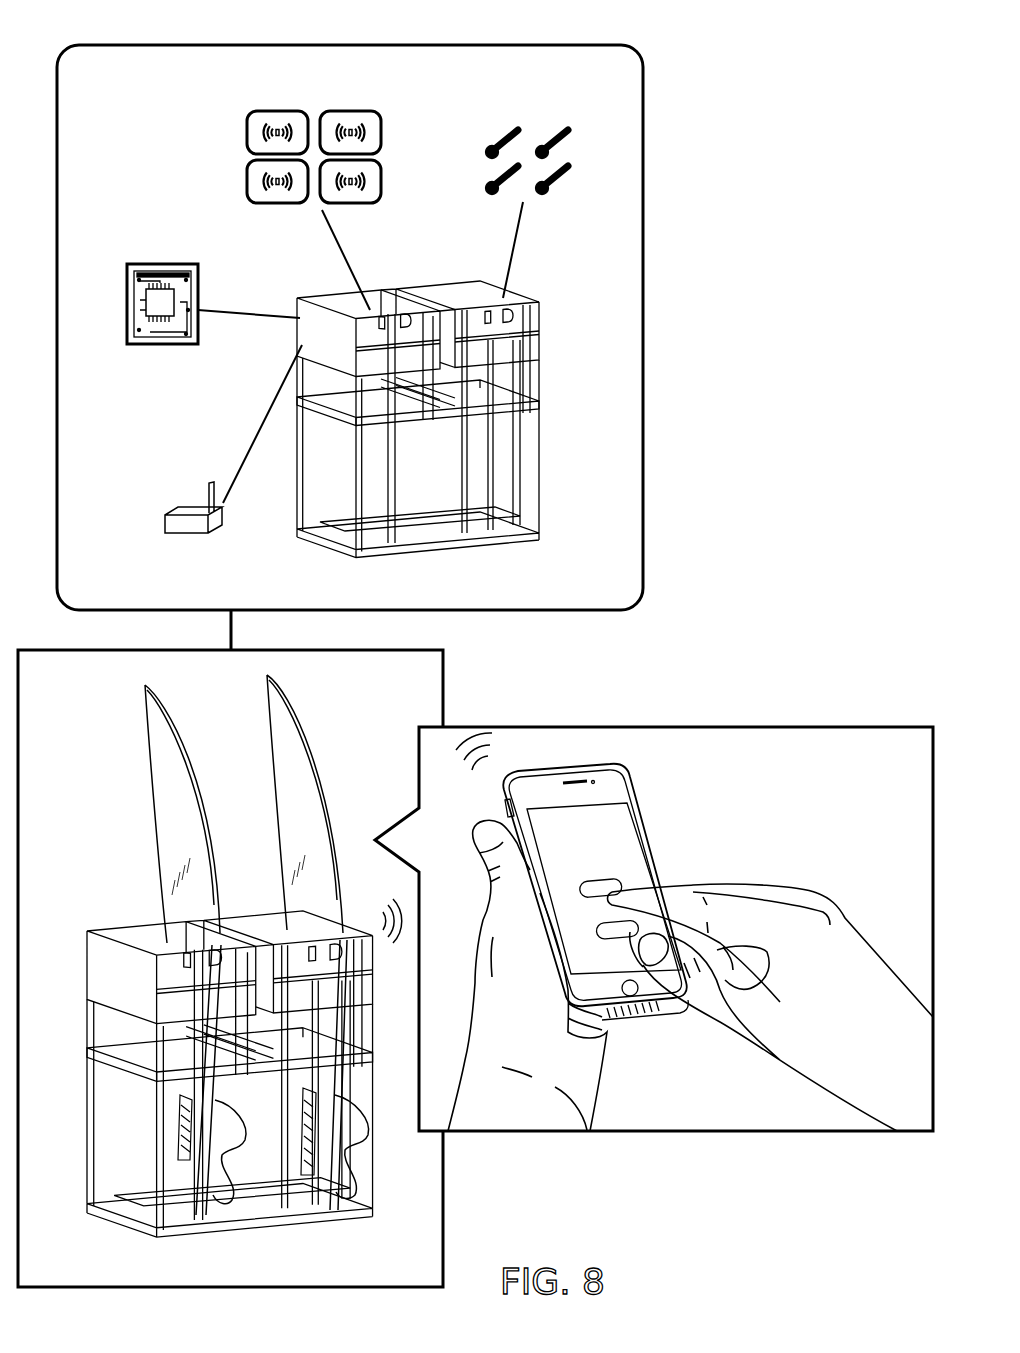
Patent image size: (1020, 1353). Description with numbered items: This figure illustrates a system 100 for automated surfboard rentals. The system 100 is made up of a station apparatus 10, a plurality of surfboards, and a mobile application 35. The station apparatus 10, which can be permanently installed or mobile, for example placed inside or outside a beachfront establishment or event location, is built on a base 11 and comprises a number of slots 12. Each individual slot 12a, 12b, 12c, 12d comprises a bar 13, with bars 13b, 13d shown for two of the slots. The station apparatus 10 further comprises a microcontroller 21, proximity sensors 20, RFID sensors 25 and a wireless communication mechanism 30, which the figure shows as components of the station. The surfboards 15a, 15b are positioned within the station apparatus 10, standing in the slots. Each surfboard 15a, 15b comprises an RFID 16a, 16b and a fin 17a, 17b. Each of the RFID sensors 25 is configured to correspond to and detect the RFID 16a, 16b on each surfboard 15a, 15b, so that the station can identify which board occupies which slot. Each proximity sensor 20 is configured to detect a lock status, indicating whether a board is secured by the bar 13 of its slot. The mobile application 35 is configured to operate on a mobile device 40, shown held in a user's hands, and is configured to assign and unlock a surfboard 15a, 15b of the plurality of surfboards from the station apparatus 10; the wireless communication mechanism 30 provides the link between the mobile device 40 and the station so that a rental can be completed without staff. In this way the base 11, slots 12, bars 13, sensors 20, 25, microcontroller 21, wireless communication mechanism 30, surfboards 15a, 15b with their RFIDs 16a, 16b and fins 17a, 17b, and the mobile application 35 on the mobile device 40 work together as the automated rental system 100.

The station apparatus 10 is at (613, 43).
The system 100 is at (838, 106).
The base 11 is at (323, 545).
The slots 12 is at (518, 387).
The slot 12a is at (121, 908).
The slot 12b is at (160, 904).
The slot 12c is at (246, 908).
The slot 12d is at (356, 1036).
The bar 13 is at (520, 336).
The bar 13b is at (183, 985).
The bar 13d is at (350, 973).
The surfboard 15a is at (198, 777).
The surfboard 15b is at (305, 728).
The RFID 16a is at (170, 1110).
The RFID 16b is at (310, 1083).
The fin 17a is at (240, 1147).
The fin 17b is at (367, 1143).
The proximity sensors 20 is at (537, 115).
The microcontroller 21 is at (128, 302).
The RFID sensors 25 is at (313, 100).
The wireless communication mechanism 30 is at (175, 512).
The mobile application 35 is at (631, 842).
The mobile device 40 is at (628, 777).